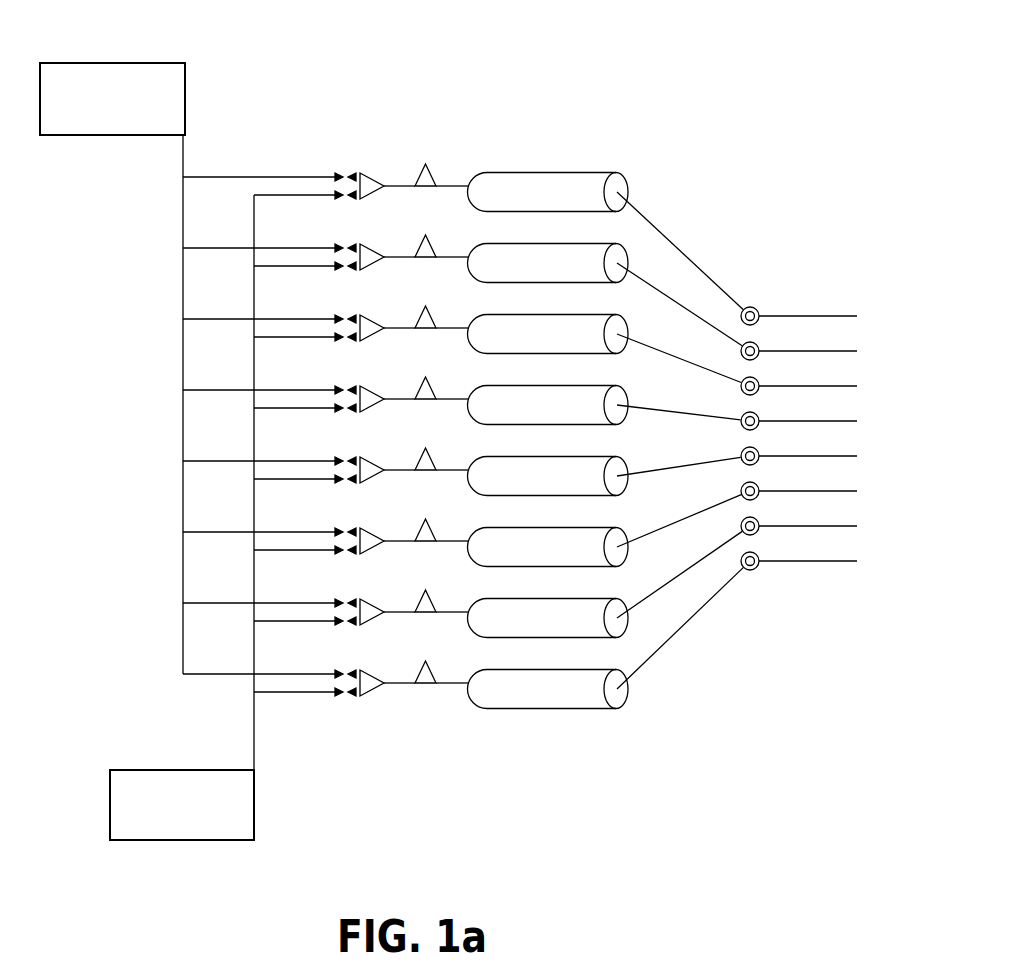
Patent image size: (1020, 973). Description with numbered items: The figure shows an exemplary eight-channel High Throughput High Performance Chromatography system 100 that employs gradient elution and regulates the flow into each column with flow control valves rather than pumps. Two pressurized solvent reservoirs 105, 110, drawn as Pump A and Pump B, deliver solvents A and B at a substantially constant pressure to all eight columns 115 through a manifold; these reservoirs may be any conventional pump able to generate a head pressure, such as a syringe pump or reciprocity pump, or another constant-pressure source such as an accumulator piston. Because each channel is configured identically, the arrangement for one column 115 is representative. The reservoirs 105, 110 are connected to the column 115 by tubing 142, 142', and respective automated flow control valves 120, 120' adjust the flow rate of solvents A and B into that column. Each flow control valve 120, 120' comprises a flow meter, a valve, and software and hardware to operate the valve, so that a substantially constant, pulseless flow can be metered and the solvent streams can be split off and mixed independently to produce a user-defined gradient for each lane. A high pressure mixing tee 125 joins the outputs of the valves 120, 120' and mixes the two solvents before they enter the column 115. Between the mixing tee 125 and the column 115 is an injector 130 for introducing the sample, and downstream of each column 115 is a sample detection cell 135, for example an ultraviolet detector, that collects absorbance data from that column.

The High Throughput High Performance Chromatography system 100 is at (780, 110).
The pressurized solvent reservoir 105 is at (113, 63).
The pressurized solvent reservoir 110 is at (136, 770).
The column 115 is at (518, 173).
The automated flow control valve 120 is at (300, 655).
The automated flow control valve 120' is at (362, 721).
The mixing tee 125 is at (365, 175).
The injector 130 is at (426, 168).
The sample detection cell 135 is at (753, 307).
The tubing 142 is at (208, 437).
The tubing 142' is at (284, 482).